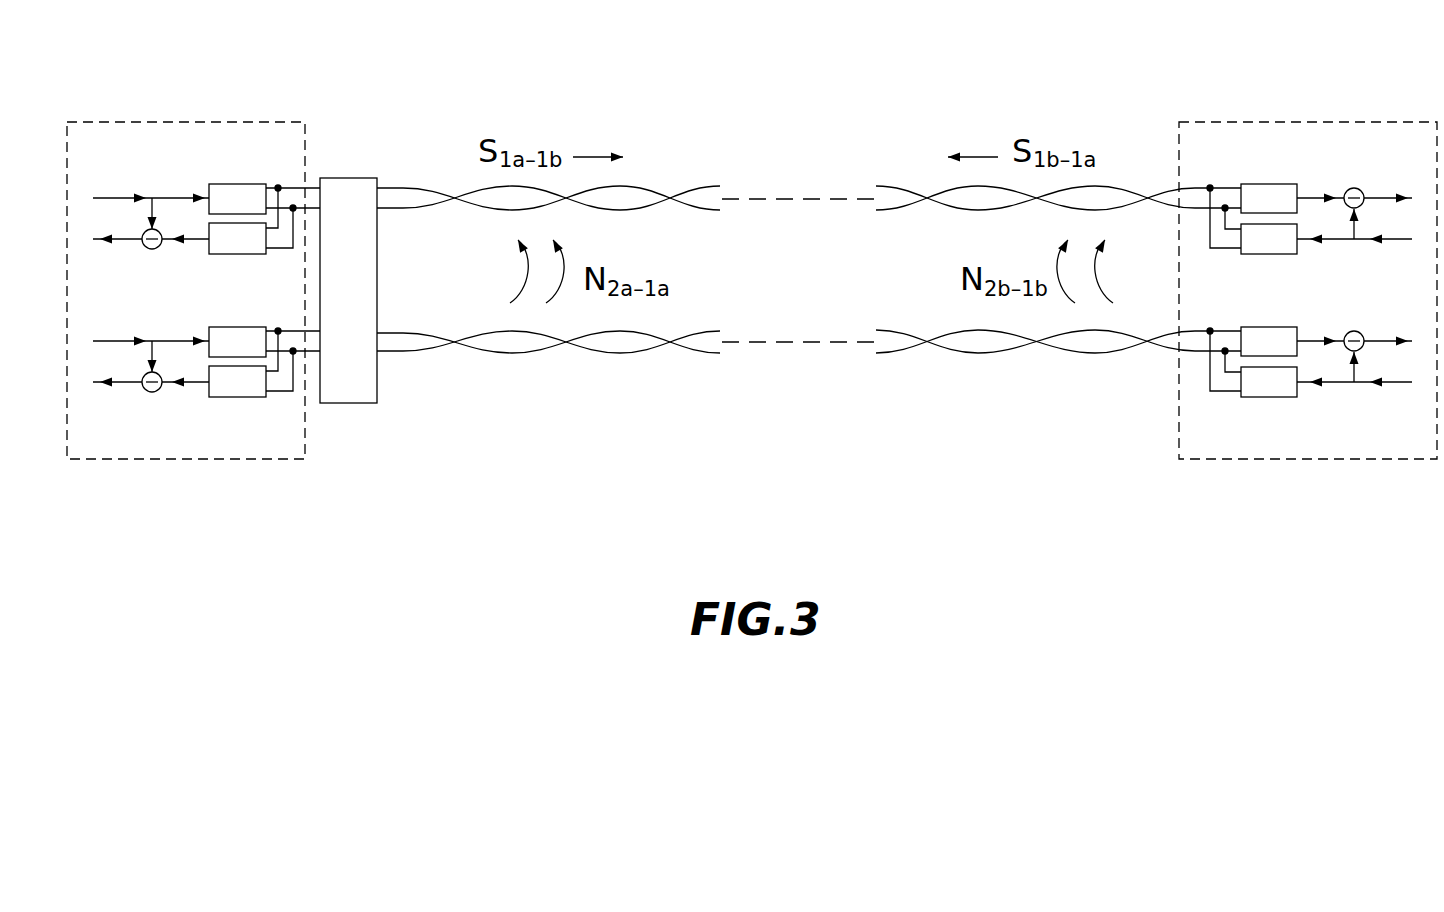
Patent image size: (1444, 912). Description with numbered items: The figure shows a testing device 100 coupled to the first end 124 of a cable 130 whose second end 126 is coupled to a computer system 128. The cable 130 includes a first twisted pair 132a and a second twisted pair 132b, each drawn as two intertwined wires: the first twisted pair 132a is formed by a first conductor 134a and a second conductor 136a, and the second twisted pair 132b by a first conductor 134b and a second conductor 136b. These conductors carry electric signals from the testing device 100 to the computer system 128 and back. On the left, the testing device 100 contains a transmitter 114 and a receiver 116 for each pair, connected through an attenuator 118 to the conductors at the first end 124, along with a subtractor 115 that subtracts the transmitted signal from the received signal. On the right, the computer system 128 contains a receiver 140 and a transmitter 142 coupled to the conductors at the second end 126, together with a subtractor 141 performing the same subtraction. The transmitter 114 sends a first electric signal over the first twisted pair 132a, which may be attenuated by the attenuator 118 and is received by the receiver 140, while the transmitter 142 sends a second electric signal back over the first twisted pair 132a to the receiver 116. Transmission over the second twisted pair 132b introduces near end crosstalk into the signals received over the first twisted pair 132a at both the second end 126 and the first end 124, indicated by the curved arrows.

The testing device 100 is at (172, 122).
The transmitter 114 is at (250, 184).
The subtractor 115 is at (150, 250).
The receiver 116 is at (222, 254).
The attenuator 118 is at (352, 178).
The first end 124 is at (345, 70).
The second end 126 is at (1133, 458).
The computer system 128 is at (1285, 122).
The cable 130 is at (848, 446).
The first twisted pair 132a is at (800, 199).
The second twisted pair 132b is at (800, 341).
The first conductor 134a is at (412, 188).
The first conductor 134b is at (395, 333).
The second conductor 136a is at (392, 208).
The second conductor 136b is at (410, 351).
The receiver 140 is at (1268, 184).
The subtractor 141 is at (1354, 188).
The transmitter 142 is at (1268, 254).